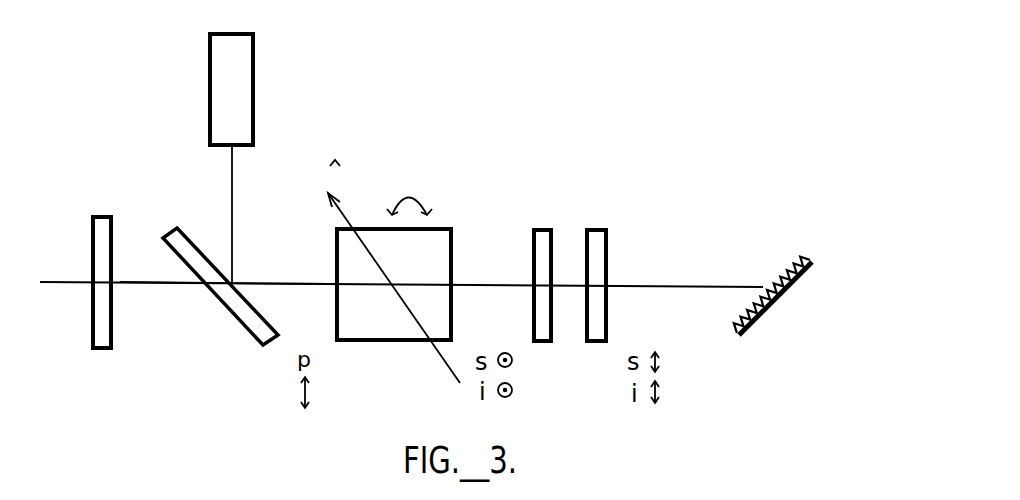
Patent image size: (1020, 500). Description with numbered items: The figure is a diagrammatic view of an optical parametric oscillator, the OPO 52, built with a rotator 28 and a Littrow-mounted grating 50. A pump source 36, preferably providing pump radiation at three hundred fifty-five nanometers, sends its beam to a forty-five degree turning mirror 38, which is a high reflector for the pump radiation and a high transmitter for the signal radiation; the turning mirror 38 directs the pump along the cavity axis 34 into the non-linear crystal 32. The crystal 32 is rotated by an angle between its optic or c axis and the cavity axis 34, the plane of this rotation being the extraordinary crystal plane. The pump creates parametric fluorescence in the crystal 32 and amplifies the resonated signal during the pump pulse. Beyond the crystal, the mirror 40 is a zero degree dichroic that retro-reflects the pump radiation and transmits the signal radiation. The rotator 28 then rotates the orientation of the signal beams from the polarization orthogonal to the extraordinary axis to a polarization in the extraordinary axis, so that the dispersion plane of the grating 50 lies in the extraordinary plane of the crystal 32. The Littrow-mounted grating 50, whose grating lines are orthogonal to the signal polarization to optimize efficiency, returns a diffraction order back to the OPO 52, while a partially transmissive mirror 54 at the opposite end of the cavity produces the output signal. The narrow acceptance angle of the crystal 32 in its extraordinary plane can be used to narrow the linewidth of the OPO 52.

The rotator 28 is at (598, 237).
The non-linear crystal 32 is at (417, 343).
The cavity axis 34 is at (150, 283).
The pump source 36 is at (243, 62).
The 45° turning mirror 38 is at (260, 340).
The mirror 40 is at (538, 343).
The Littrow-mounted grating 50 is at (755, 322).
The OPO 52 is at (665, 105).
The partially transmissive mirror 54 is at (108, 332).